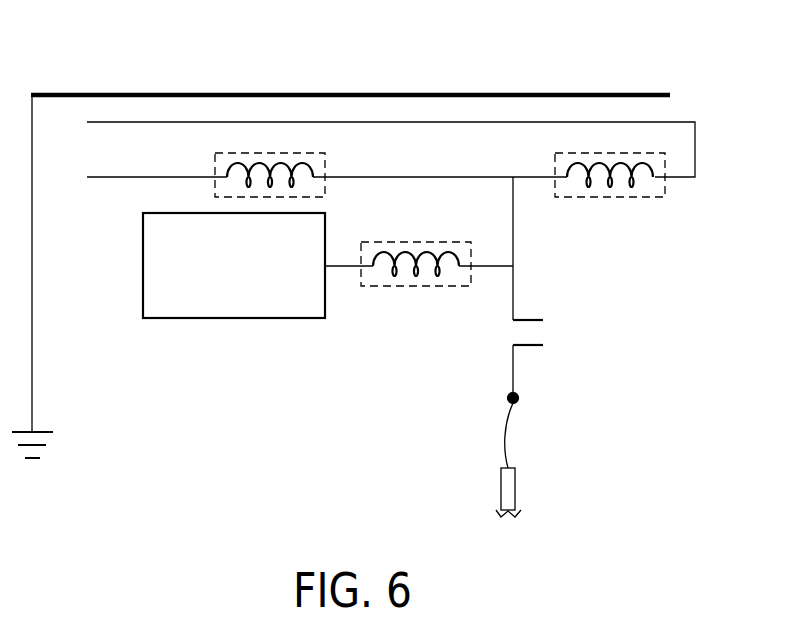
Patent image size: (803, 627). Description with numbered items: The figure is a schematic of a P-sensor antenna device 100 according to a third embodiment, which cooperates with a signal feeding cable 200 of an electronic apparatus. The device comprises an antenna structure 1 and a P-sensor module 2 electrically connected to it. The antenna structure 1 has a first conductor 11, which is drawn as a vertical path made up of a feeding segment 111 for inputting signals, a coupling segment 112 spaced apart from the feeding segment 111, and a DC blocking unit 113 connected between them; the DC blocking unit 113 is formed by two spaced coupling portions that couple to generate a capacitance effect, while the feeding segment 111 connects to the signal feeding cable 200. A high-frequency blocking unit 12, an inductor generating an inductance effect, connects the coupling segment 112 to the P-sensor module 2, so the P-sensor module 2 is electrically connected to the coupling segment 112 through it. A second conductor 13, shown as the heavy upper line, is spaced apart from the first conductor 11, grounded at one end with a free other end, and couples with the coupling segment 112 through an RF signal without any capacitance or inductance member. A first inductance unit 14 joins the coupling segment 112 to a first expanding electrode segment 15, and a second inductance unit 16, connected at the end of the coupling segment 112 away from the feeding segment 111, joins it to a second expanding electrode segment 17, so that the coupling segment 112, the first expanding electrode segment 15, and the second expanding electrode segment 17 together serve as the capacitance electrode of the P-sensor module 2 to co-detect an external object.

The second conductor 13 is at (473, 93).
The first expanding electrode segment 15 is at (695, 148).
The second expanding electrode segment 17 is at (110, 177).
The second inductance unit 16 is at (325, 163).
The first inductance unit 14 is at (632, 197).
The P-sensor antenna device 100 is at (328, 329).
The P-sensor module 2 is at (275, 324).
The antenna structure 1 is at (417, 321).
The high-frequency blocking unit 12 is at (449, 286).
The first conductor 11 is at (601, 290).
The coupling segment 112 is at (513, 247).
The DC blocking unit 113 is at (530, 320).
The feeding segment 111 is at (578, 374).
The signal feeding cable 200 is at (522, 489).